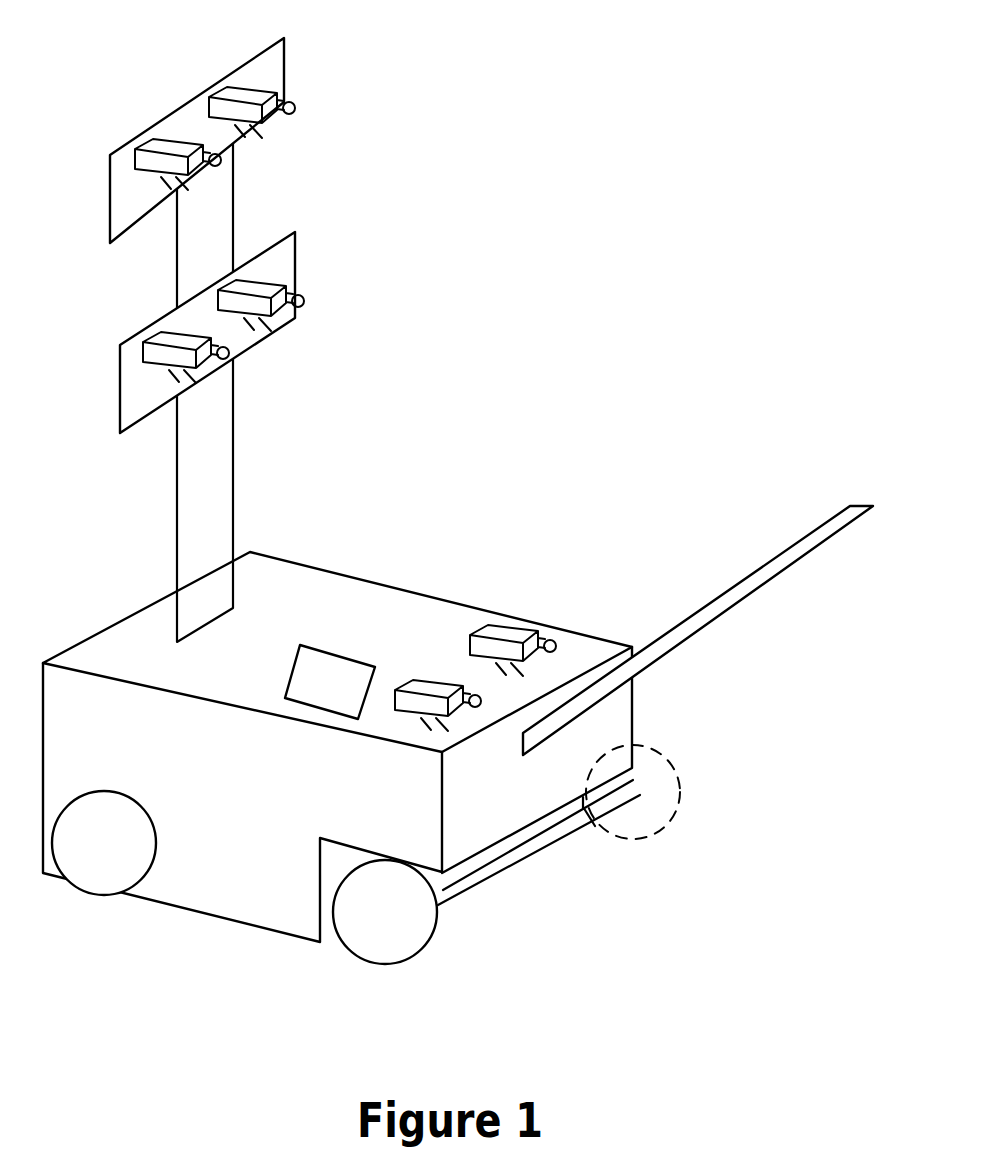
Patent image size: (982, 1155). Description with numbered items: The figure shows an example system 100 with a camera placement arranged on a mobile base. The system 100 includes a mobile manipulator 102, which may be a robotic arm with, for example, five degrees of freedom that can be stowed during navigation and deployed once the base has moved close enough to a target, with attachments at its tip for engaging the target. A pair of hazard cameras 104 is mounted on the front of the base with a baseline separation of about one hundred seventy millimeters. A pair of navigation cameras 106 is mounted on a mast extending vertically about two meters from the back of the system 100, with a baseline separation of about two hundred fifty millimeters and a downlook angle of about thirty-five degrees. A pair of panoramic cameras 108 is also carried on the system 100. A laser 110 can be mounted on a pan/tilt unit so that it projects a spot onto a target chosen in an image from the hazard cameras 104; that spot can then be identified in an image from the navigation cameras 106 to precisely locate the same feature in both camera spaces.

The system 100 is at (458, 491).
The mobile manipulator 102 is at (730, 615).
The pair of hazard cameras 104 is at (539, 605).
The pair of navigation cameras 106 is at (319, 283).
The pair of panoramic cameras 108 is at (318, 97).
The laser 110 is at (330, 682).